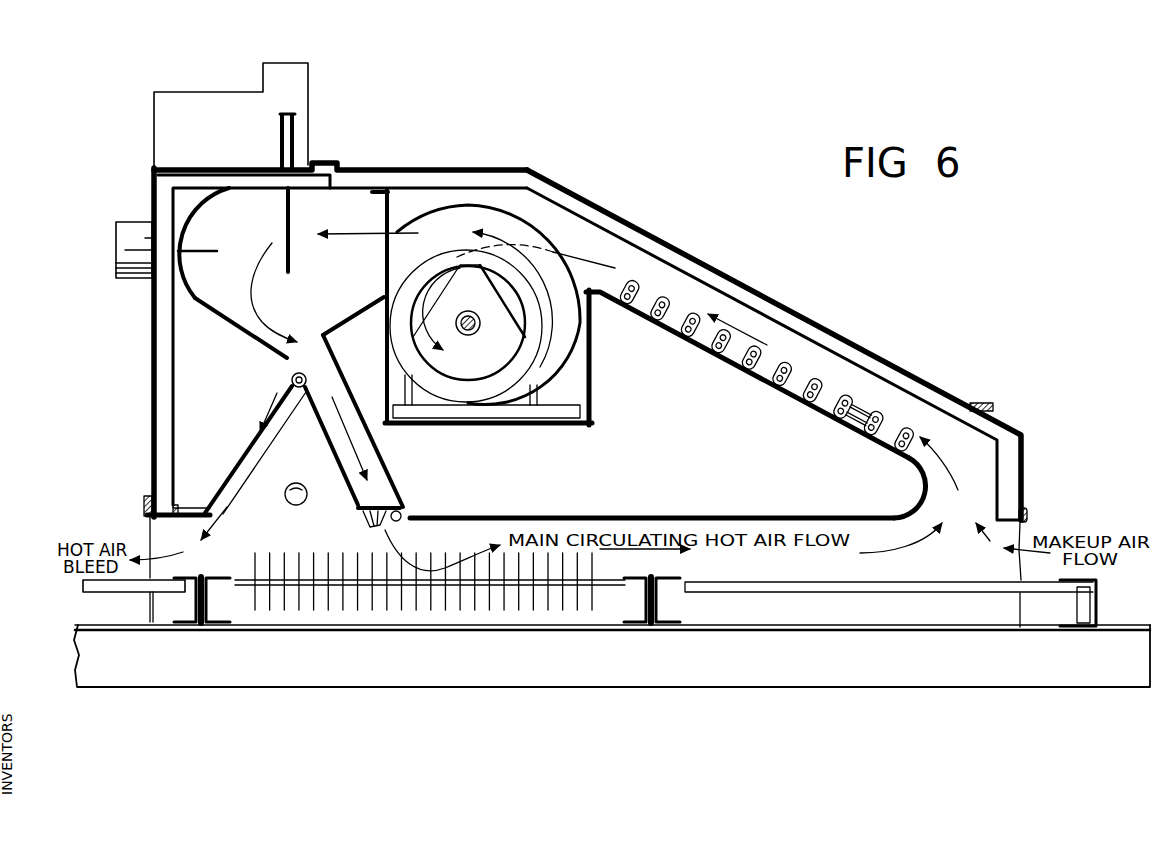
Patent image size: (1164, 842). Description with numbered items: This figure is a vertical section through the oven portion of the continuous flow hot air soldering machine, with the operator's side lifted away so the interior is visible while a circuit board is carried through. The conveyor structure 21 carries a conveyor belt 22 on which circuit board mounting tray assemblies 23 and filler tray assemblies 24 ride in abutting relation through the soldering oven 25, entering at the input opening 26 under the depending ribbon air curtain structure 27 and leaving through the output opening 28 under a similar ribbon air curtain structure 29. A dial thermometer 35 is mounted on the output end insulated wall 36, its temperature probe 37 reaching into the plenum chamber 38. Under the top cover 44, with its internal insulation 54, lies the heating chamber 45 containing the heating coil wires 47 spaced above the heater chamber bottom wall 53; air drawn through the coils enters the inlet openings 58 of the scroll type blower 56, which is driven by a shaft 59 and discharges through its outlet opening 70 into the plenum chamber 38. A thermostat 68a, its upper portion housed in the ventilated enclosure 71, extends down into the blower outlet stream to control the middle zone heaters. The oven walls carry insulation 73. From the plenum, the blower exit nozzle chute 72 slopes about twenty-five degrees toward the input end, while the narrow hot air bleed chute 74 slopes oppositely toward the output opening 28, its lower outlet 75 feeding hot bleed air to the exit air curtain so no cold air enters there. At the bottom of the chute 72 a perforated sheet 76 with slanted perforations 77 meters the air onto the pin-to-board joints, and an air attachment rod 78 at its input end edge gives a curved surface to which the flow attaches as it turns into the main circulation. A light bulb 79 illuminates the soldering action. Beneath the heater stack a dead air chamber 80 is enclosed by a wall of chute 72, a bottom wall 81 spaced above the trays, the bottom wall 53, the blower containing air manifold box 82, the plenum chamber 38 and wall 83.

The conveyor structure 21 is at (165, 689).
The conveyor belt 22 is at (120, 623).
The circuit board mounting tray assemblies 23 is at (253, 580).
The filler tray assemblies 24 is at (80, 584).
The continuous pin to board soldering oven 25 is at (541, 160).
The input opening 26 is at (1007, 518).
The ribbon air curtain structure 27 is at (1023, 528).
The output opening 28 is at (165, 515).
The ribbon air curtain structure 29 is at (148, 530).
The dial thermometer 35 is at (128, 223).
The output end insulated wall 36 is at (151, 386).
The temperature probe 37 is at (197, 250).
The plenum chamber 38 is at (213, 290).
The top cover 44 is at (602, 208).
The heating chamber 45 is at (801, 353).
The heating coil wires 47 is at (692, 322).
The heater chamber bottom wall 53 is at (781, 391).
The internal insulation 54 is at (713, 275).
The blower 56 is at (546, 234).
The inlet openings 58 is at (478, 322).
The shaft 59 is at (473, 339).
The thermostat 68a is at (292, 218).
The outlet opening 70 is at (384, 274).
The ventilated enclosure 71 is at (309, 88).
The blower exit nozzle chute 72 is at (390, 468).
The insulation 73 is at (151, 336).
The hot air bleed chute 74 is at (236, 452).
The lower outlet 75 is at (226, 511).
The perforated sheet 76 is at (358, 509).
The perforations 77 is at (361, 529).
The air attachment rod 78 is at (401, 523).
The light bulb 79 is at (290, 501).
The chamber 80 is at (905, 497).
The bottom wall 81 is at (690, 517).
The air manifold box 82 is at (598, 399).
The wall 83 is at (343, 330).